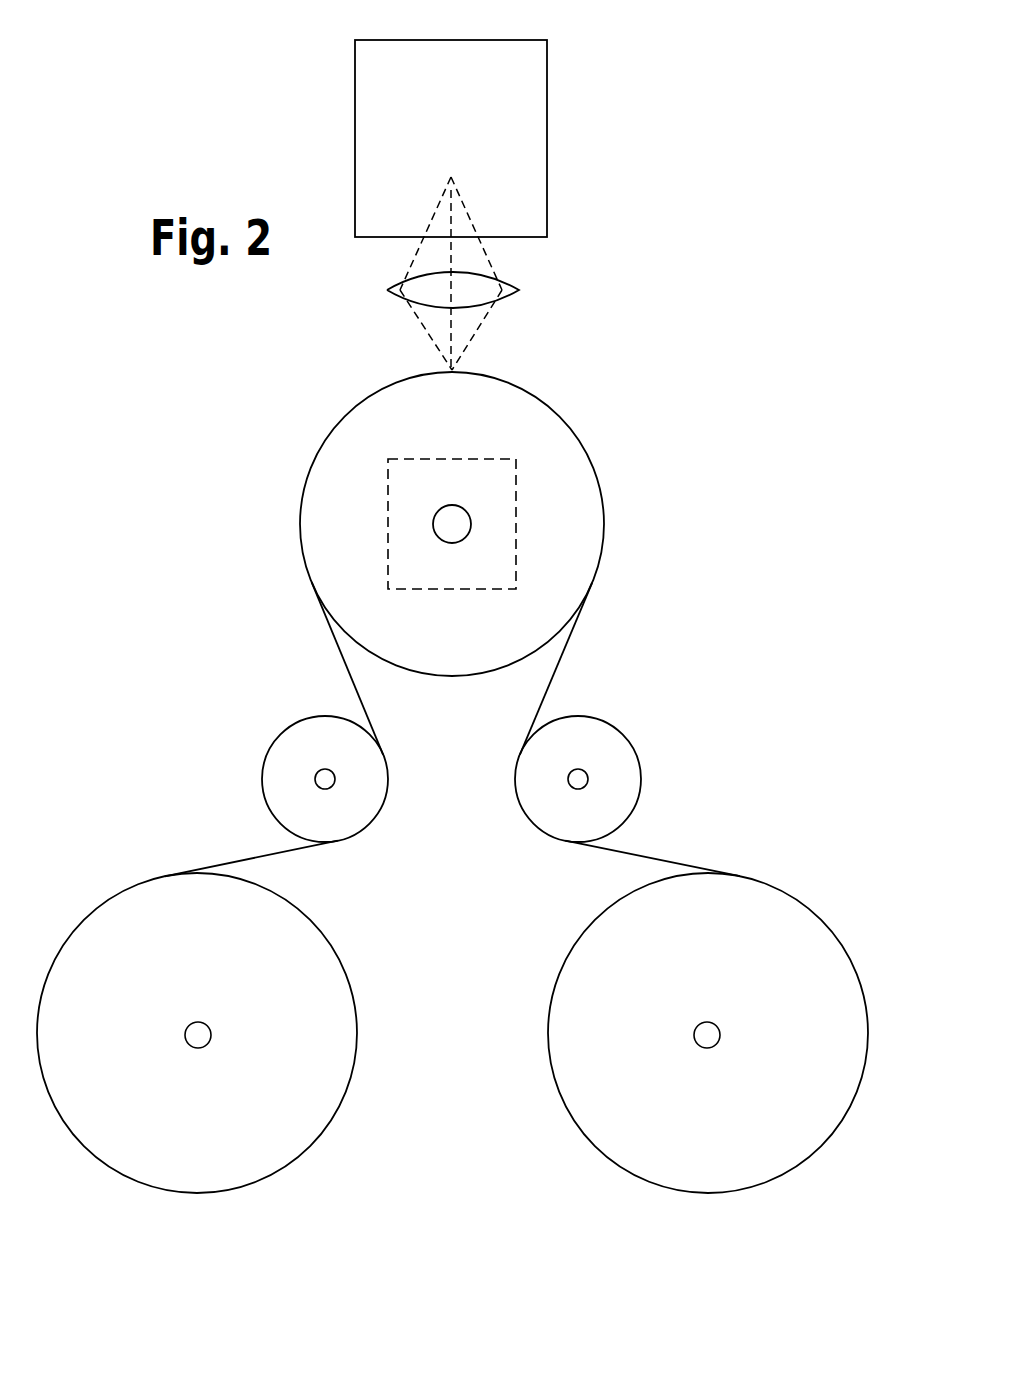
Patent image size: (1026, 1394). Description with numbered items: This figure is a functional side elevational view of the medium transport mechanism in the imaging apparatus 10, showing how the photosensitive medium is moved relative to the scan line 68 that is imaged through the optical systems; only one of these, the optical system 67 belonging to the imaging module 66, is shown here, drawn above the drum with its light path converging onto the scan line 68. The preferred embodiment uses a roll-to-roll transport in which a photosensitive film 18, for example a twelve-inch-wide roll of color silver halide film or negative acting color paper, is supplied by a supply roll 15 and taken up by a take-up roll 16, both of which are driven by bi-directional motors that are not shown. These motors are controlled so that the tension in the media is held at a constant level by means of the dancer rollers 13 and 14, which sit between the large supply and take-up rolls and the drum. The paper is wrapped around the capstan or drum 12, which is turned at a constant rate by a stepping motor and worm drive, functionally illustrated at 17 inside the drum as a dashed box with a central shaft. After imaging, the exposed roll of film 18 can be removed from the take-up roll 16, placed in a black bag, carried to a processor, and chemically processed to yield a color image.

The apparatus 10 is at (700, 143).
The capstan or drum 12 is at (556, 413).
The dancer roller 13 is at (375, 730).
The dancer roller 14 is at (626, 733).
The supply roll 15 is at (312, 922).
The take-up roll 16 is at (823, 922).
The stepping motor and worm drive 17 is at (456, 503).
The photosensitive film 18 is at (452, 729).
The imaging module 66 is at (547, 40).
The optical system 67 is at (530, 282).
The scan line 68 is at (455, 372).